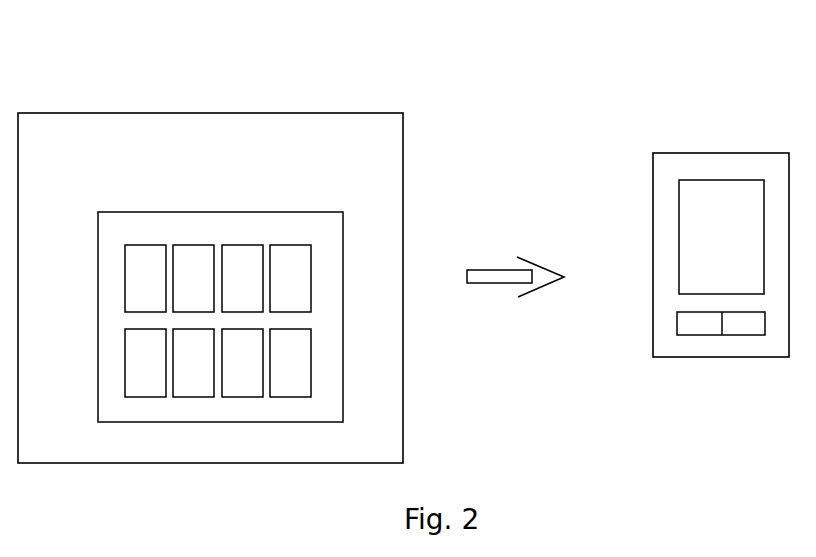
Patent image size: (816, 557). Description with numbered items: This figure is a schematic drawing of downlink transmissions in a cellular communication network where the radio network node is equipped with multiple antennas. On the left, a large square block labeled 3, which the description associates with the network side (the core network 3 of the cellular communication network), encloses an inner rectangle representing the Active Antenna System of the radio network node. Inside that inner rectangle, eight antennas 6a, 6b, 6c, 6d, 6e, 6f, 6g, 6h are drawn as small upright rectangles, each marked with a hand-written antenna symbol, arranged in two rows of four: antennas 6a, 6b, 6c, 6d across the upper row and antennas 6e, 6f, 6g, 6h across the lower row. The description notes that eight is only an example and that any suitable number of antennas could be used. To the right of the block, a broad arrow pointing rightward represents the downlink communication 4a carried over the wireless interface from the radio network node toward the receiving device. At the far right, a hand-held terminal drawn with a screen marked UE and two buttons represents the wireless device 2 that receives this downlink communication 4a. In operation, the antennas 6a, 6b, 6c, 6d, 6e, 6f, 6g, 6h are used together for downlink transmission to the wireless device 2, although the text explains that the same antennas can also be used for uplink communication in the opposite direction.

The wireless device 2 is at (762, 153).
The core network 3 is at (167, 113).
The downlink communication 4a is at (510, 270).
The antenna 6a is at (132, 244).
The antenna 6b is at (180, 244).
The antenna 6c is at (229, 244).
The antenna 6d is at (277, 244).
The antenna 6e is at (125, 365).
The antenna 6f is at (184, 328).
The antenna 6g is at (257, 328).
The antenna 6h is at (311, 362).